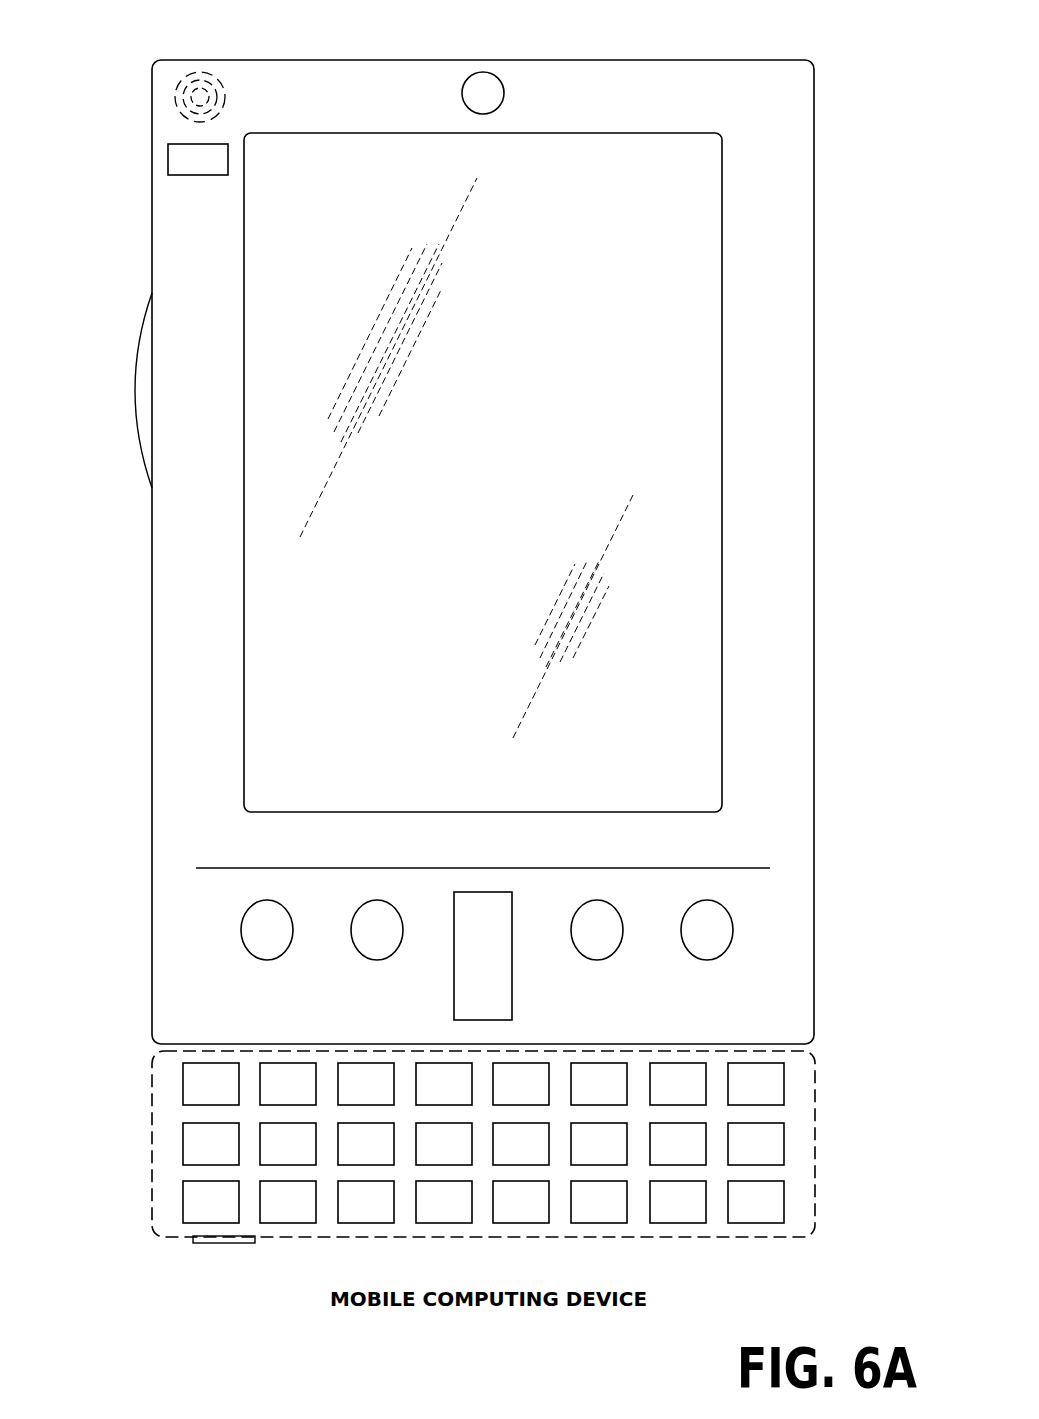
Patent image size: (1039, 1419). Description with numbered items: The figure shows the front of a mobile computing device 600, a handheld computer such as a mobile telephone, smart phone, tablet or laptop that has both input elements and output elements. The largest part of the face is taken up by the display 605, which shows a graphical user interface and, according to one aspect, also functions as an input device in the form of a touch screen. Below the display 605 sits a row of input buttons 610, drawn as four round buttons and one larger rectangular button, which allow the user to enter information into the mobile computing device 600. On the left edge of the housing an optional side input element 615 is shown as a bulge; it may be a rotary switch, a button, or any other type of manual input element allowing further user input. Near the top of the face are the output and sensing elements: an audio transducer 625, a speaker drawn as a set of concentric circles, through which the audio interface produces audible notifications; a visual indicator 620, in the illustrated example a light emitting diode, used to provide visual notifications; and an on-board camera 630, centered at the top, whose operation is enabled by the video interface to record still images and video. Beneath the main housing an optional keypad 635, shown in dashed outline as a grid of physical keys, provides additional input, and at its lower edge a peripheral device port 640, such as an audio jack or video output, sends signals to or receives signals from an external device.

The mobile computing device 600 is at (778, 58).
The display 605 is at (267, 647).
The input buttons 610 is at (267, 960).
The side input element 615 is at (131, 393).
The visual indicator 620 is at (168, 160).
The audio transducer 625 is at (172, 98).
The on-board camera 630 is at (483, 72).
The keypad 635 is at (165, 1145).
The peripheral device port 640 is at (202, 1246).